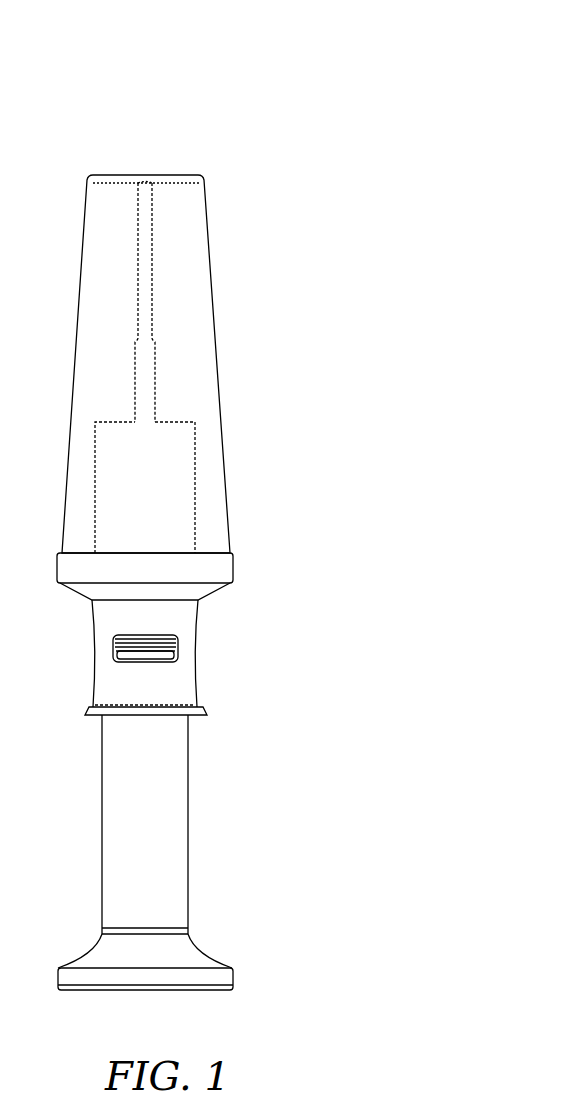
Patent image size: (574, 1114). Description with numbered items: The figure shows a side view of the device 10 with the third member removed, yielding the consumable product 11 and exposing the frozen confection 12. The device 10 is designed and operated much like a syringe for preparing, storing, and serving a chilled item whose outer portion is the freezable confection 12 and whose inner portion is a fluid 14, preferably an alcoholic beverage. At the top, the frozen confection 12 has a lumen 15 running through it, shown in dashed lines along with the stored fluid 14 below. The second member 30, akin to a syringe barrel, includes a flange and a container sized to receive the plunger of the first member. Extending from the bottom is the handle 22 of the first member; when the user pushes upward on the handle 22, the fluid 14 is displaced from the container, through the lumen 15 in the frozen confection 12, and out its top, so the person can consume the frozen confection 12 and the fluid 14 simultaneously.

The device 10 is at (256, 504).
The consumable product 11 is at (209, 285).
The freezable confection 12 is at (216, 346).
The fluid 14 is at (145, 487).
The lumen 15 is at (146, 287).
The handle 22 is at (168, 852).
The second member 30 is at (253, 552).